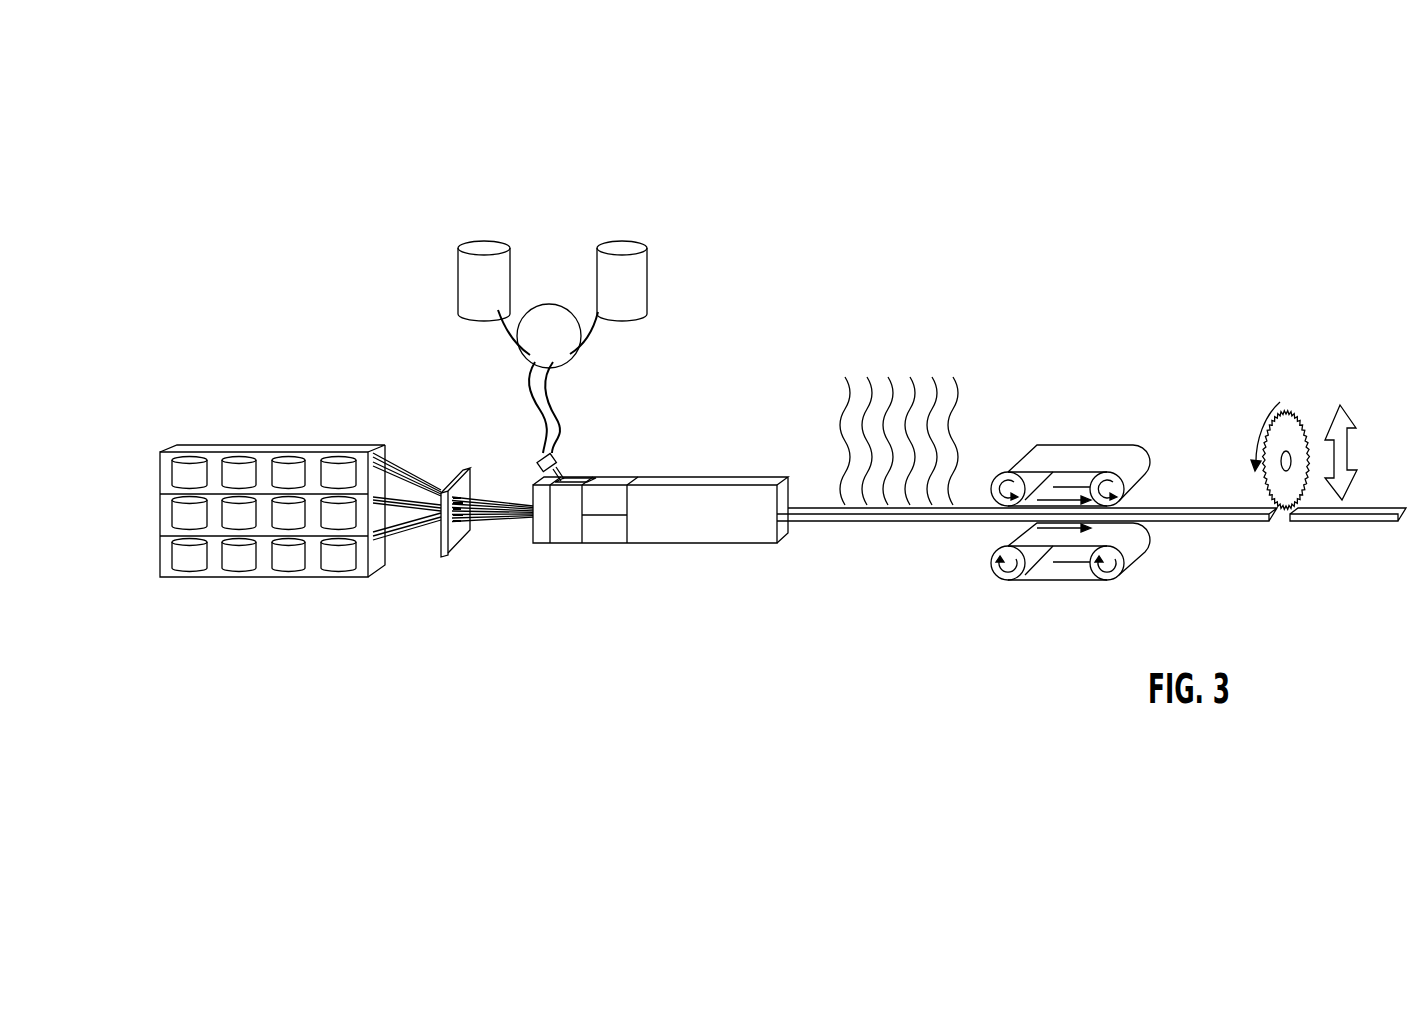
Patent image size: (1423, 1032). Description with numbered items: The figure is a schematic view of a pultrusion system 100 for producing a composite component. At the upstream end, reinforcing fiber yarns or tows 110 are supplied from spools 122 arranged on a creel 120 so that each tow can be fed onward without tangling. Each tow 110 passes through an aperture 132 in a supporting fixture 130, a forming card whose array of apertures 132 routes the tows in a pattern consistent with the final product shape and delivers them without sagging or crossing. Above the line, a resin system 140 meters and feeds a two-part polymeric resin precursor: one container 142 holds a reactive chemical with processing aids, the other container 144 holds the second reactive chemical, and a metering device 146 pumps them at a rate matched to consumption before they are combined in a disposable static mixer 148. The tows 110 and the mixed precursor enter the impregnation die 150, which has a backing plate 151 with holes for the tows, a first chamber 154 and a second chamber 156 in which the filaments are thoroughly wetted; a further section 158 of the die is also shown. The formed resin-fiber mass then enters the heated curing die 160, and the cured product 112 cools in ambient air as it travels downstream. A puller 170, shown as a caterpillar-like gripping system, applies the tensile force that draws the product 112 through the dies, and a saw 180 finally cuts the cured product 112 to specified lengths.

The system 100 is at (1190, 303).
The fiber yarns or tows 110 is at (427, 468).
The cured product 112 is at (817, 519).
The creel 120 is at (272, 511).
The spools 122 is at (186, 475).
The supporting fixture 130 is at (487, 491).
The apertures 132 is at (460, 528).
The resin metering and feeding system 140 is at (574, 326).
The container 142 is at (503, 268).
The container 144 is at (637, 298).
The metering device 146 is at (548, 310).
The static mixer 148 is at (562, 480).
The impregnation die 150 is at (660, 507).
The backing plate 151 is at (535, 543).
The first chamber 154 is at (562, 543).
The second chamber 156 is at (620, 543).
The forming section 158 is at (617, 492).
The curing die 160 is at (755, 482).
The puller 170 is at (1129, 399).
The saw 180 is at (1298, 422).